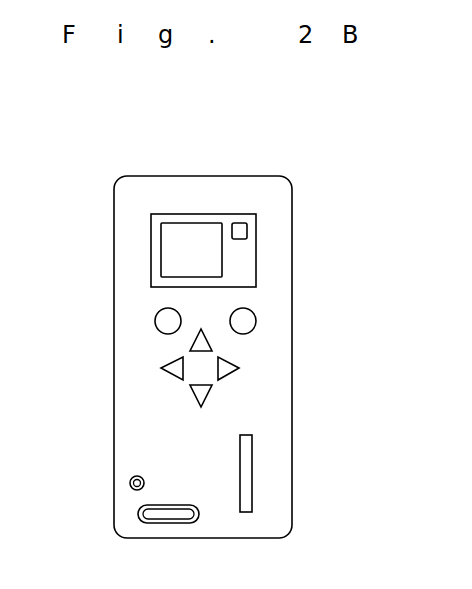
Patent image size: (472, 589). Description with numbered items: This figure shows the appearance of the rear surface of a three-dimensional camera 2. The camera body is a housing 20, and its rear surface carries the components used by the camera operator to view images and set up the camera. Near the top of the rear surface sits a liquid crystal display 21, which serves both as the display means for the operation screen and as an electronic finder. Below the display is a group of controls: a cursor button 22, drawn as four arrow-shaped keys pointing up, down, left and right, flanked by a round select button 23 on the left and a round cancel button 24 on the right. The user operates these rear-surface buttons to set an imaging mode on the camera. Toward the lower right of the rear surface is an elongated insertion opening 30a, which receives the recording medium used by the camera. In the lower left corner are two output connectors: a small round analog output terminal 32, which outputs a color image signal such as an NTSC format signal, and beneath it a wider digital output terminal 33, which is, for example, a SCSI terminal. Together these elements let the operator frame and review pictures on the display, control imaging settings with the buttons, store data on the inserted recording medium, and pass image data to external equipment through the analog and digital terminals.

The three-dimensional camera 2 is at (410, 208).
The housing 20 is at (292, 268).
The liquid crystal display 21 is at (151, 257).
The cursor button 22 is at (243, 361).
The select button 23 is at (155, 321).
The cancel button 24 is at (256, 321).
The insertion opening 30a is at (252, 463).
The analog output terminal 32 is at (130, 483).
The digital output terminal 33 is at (138, 514).